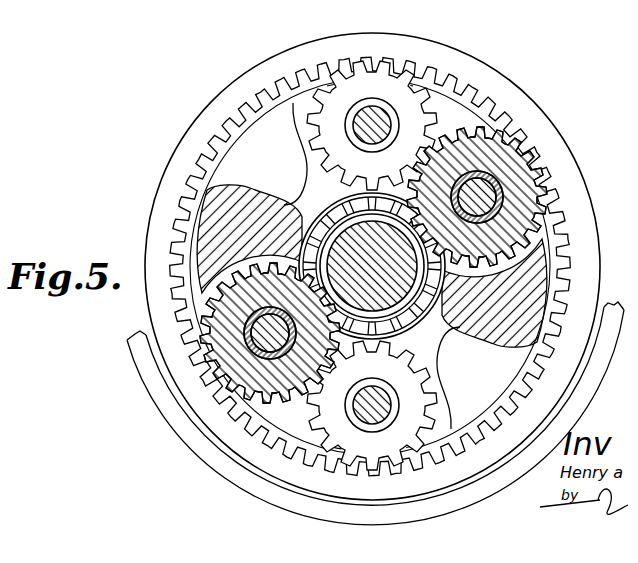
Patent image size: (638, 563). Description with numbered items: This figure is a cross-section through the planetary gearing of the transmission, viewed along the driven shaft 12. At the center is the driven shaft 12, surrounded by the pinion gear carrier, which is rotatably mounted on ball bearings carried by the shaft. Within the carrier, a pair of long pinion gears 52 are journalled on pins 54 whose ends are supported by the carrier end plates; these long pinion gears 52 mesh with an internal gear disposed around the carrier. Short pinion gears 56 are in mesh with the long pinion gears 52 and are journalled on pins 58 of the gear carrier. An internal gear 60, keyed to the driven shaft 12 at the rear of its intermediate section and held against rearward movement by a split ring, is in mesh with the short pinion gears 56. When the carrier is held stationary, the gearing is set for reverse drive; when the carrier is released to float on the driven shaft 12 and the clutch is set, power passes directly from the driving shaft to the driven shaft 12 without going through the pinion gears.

The driven shaft 12 is at (398, 302).
The long pinion gears 52 is at (482, 182).
The pins 54 is at (505, 155).
The short pinion gears 56 is at (395, 97).
The pins 58 is at (355, 127).
The internal gear 60 is at (475, 83).